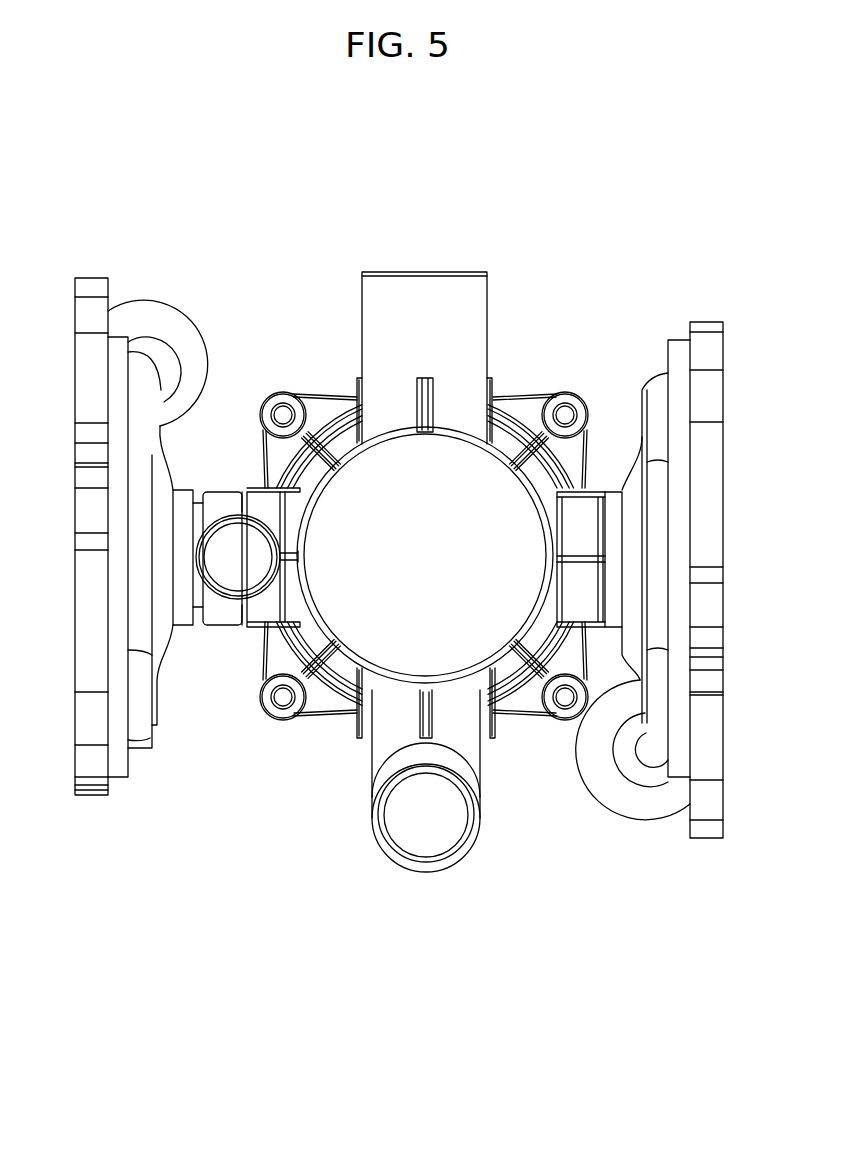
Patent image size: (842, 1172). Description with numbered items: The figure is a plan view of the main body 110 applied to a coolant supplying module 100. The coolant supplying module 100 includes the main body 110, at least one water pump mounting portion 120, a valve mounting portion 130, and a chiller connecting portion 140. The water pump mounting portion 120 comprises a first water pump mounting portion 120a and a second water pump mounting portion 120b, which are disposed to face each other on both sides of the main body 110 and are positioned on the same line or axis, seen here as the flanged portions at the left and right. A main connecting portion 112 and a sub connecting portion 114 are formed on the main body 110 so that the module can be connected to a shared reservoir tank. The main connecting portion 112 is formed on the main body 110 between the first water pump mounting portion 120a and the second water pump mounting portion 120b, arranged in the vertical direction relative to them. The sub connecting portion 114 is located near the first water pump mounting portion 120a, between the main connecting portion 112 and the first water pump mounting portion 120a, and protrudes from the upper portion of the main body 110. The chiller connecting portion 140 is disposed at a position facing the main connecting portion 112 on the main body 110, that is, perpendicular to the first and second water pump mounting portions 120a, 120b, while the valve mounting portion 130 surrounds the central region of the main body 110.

The coolant supplying module 100 is at (242, 223).
The main body 110 is at (355, 483).
The main connecting portion 112 is at (392, 817).
The sub connecting portion 114 is at (237, 567).
The water pump mounting portion 120 is at (706, 1006).
The first water pump mounting portion 120a is at (92, 770).
The second water pump mounting portion 120b is at (708, 827).
The valve mounting portion 130 is at (507, 710).
The chiller connecting portion 140 is at (428, 283).